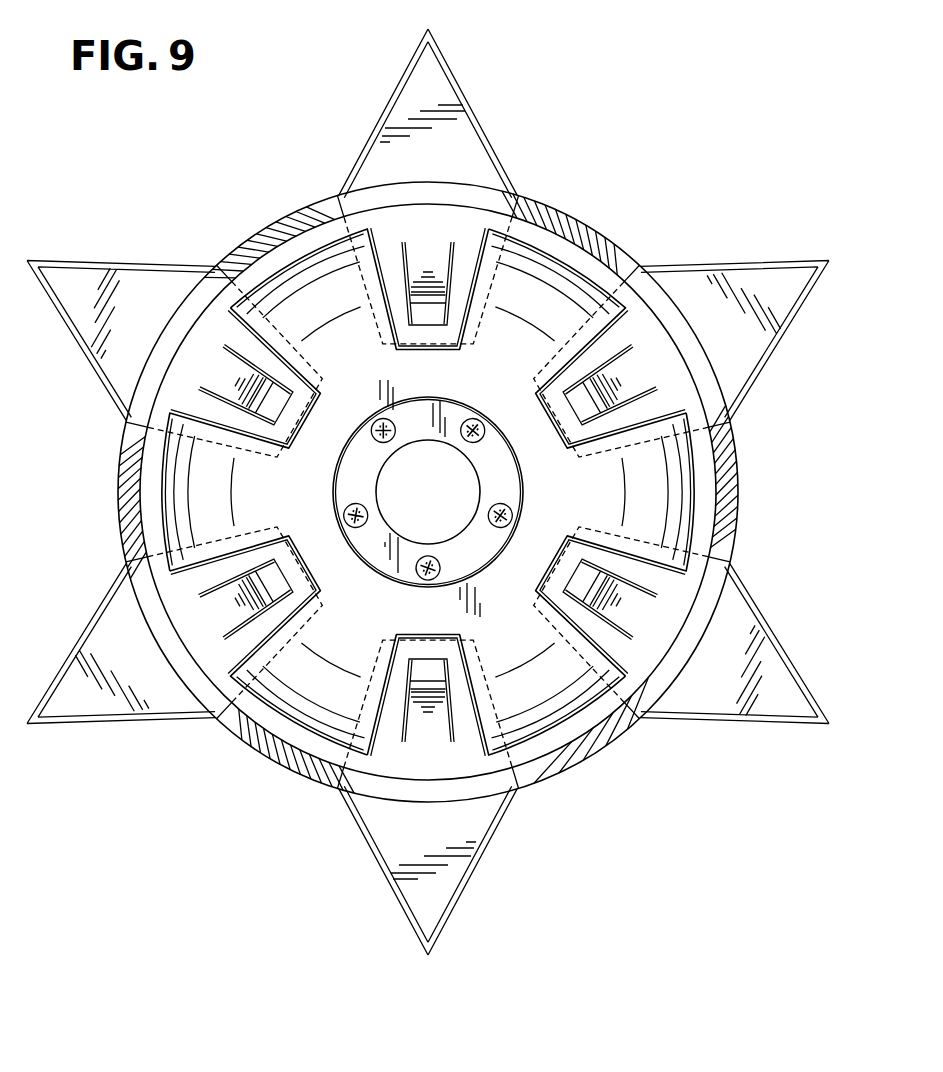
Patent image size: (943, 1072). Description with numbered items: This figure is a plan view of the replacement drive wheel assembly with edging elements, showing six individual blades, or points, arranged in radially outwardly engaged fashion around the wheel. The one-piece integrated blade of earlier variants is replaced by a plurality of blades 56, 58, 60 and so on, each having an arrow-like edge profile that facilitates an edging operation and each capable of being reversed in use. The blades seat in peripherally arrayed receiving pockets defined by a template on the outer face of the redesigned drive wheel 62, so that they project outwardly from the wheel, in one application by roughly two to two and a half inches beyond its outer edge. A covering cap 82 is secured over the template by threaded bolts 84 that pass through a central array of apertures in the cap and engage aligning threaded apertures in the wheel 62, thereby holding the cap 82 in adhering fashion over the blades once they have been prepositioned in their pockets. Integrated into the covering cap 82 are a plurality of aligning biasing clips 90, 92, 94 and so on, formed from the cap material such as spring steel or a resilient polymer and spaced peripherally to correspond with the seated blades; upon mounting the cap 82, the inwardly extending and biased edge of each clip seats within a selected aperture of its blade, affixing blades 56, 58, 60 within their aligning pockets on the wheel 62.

The blade 56 is at (148, 282).
The blade 58 is at (400, 114).
The blade 60 is at (698, 287).
The drive wheel 62 is at (285, 208).
The covering cap 82 is at (553, 262).
The threaded bolts 84 is at (470, 421).
The aligning biasing clip 90 is at (291, 445).
The aligning biasing clip 92 is at (407, 300).
The aligning biasing clip 94 is at (572, 447).